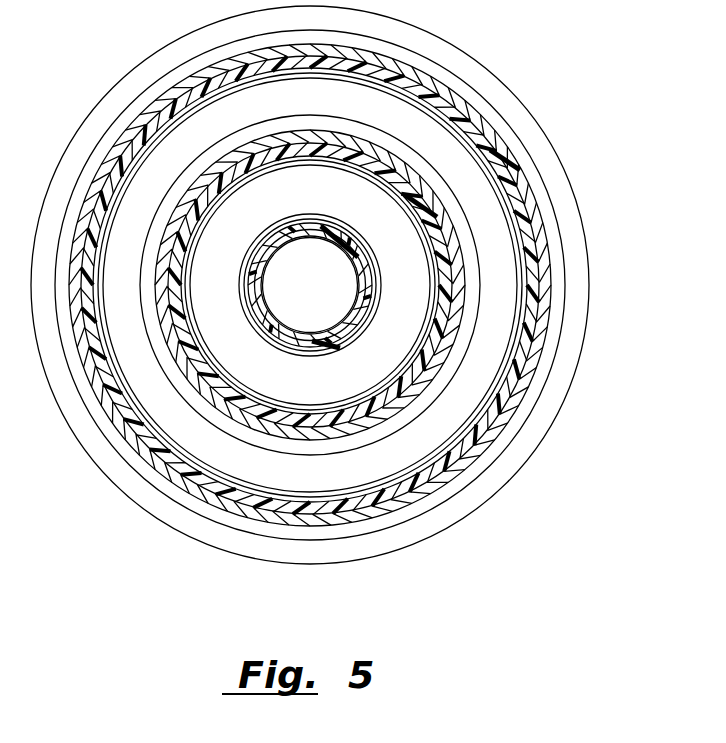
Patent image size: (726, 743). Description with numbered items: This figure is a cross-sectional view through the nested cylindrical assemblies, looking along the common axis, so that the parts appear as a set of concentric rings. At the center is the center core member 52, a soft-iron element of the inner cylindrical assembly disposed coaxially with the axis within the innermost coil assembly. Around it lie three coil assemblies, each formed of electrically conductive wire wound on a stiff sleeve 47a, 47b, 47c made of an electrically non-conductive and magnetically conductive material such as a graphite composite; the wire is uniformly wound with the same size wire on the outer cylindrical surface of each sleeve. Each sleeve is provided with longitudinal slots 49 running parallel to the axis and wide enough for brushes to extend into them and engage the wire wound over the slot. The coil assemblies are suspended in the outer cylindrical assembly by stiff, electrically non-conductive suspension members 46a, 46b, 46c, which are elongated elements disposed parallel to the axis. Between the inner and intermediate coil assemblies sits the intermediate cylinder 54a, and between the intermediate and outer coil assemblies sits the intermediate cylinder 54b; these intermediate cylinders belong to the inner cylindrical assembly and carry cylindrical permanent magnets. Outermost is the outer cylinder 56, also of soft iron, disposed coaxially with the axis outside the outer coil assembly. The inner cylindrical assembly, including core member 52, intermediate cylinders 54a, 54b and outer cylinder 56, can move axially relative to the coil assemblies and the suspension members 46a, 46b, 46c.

The suspension member 46a is at (363, 252).
The suspension member 46b is at (453, 256).
The suspension member 46c is at (548, 226).
The stiff sleeve 47a is at (330, 229).
The stiff sleeve 47b is at (435, 226).
The stiff sleeve 47c is at (512, 164).
The longitudinal slot 49 is at (367, 284).
The center core member 52 is at (325, 286).
The intermediate cylinder 54a is at (418, 325).
The intermediate cylinder 54b is at (514, 330).
The outer cylinder 56 is at (584, 258).